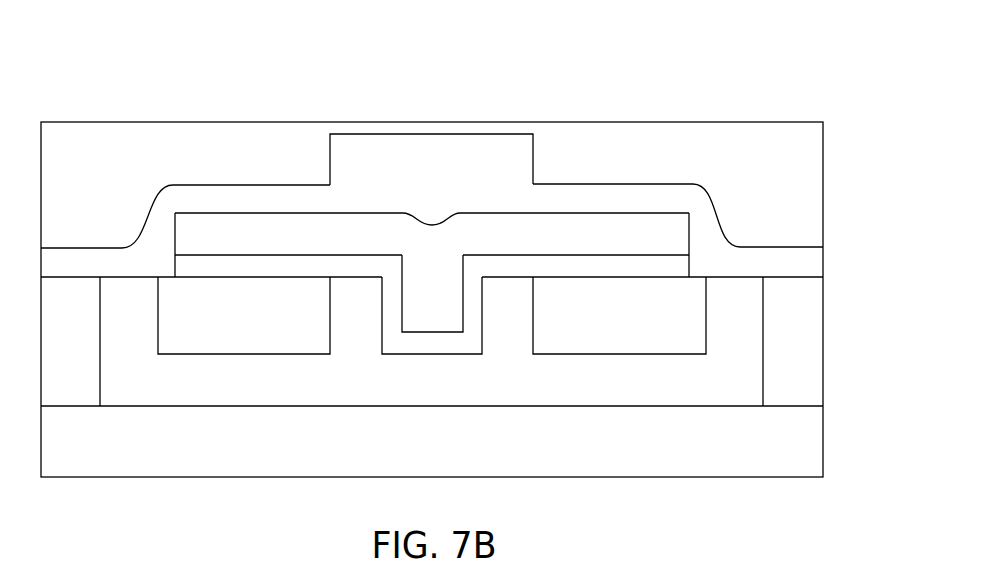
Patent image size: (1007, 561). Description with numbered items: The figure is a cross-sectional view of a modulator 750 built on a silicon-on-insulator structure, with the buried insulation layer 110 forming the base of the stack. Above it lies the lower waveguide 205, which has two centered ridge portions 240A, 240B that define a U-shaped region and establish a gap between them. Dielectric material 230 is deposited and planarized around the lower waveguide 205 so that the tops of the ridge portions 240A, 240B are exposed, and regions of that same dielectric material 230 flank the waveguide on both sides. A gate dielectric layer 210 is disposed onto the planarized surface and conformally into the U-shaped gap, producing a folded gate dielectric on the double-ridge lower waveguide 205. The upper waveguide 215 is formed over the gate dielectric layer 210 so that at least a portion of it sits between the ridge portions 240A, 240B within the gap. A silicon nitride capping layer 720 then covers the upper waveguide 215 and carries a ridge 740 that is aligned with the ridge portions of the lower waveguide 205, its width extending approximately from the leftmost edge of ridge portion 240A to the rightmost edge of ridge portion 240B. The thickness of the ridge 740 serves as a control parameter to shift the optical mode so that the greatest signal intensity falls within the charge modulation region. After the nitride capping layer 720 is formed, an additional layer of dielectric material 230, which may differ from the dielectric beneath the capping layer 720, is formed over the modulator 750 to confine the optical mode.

The buried insulation layer 110 is at (789, 450).
The lower waveguide 205 is at (149, 325).
The dielectric material 230 is at (119, 208).
The ridge portion 240A is at (357, 312).
The ridge portion 240B is at (513, 312).
The gate dielectric layer 210 is at (690, 266).
The upper waveguide 215 is at (690, 226).
The silicon nitride capping layer 720 is at (808, 247).
The ridge 740 is at (487, 147).
The modulator 750 is at (652, 96).